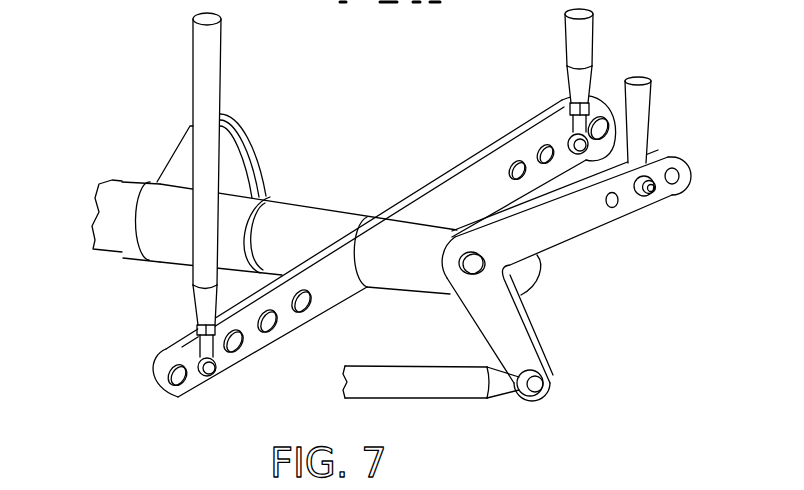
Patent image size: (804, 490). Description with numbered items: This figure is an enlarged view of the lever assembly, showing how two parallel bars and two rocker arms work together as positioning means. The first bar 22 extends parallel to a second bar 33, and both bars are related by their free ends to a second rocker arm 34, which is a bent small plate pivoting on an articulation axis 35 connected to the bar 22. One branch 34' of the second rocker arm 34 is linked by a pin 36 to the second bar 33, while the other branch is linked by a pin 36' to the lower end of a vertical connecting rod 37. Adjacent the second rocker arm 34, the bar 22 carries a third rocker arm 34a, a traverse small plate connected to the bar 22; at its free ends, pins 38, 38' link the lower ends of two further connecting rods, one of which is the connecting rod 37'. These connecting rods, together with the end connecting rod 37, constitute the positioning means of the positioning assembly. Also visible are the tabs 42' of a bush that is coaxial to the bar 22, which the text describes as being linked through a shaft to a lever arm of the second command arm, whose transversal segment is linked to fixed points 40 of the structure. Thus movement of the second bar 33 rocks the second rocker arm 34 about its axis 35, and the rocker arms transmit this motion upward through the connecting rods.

The bar 22 is at (273, 227).
The second bar 33 is at (377, 388).
The second rocker arm 34 is at (551, 275).
The branch of second rocker arm 34' is at (525, 339).
The third rocker arm 34a is at (340, 312).
The articulation axis 35 is at (471, 269).
The pin 36 is at (564, 380).
The pin 36' is at (672, 199).
The vertical connecting rod 37 is at (663, 120).
The connecting rod 37' is at (228, 185).
The pin 38 is at (218, 390).
The pin 38' is at (638, 136).
The fixed points 40 is at (240, 186).
The tabs 42' is at (233, 162).